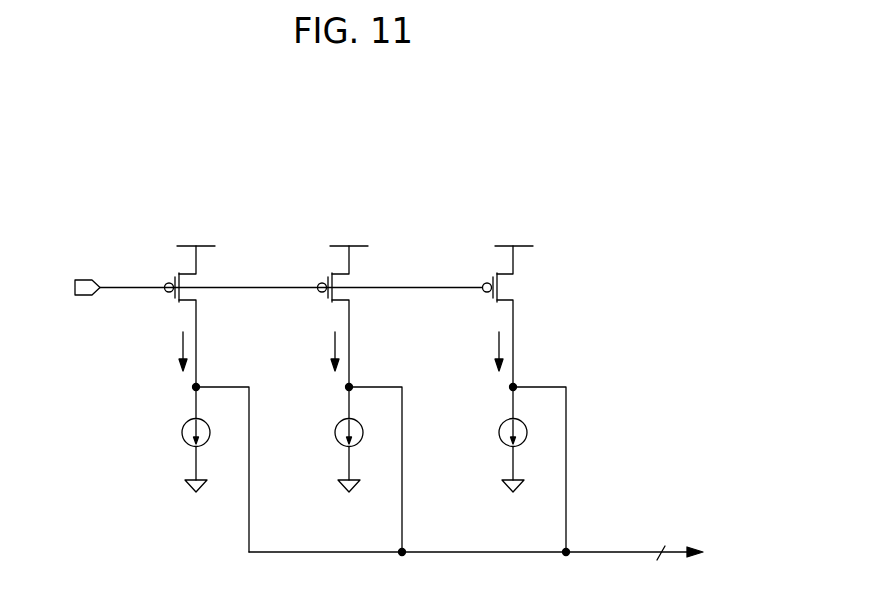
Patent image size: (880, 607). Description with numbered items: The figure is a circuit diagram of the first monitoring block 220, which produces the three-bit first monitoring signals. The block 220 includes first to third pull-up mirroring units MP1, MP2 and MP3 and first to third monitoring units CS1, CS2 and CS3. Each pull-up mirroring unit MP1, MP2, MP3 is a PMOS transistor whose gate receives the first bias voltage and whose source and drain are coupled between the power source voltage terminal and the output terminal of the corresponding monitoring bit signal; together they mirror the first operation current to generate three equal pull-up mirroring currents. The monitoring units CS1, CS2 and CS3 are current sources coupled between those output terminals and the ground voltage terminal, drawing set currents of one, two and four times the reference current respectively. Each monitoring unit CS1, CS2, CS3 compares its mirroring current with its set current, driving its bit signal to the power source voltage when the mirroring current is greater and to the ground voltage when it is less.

The first monitoring block 220 is at (77, 197).
The third pull-up mirroring unit MP3 is at (199, 316).
The second pull-up mirroring unit MP2 is at (353, 316).
The first pull-up mirroring unit MP1 is at (518, 316).
The third monitoring unit CS3 is at (207, 439).
The second monitoring unit CS2 is at (361, 439).
The first monitoring unit CS1 is at (524, 439).